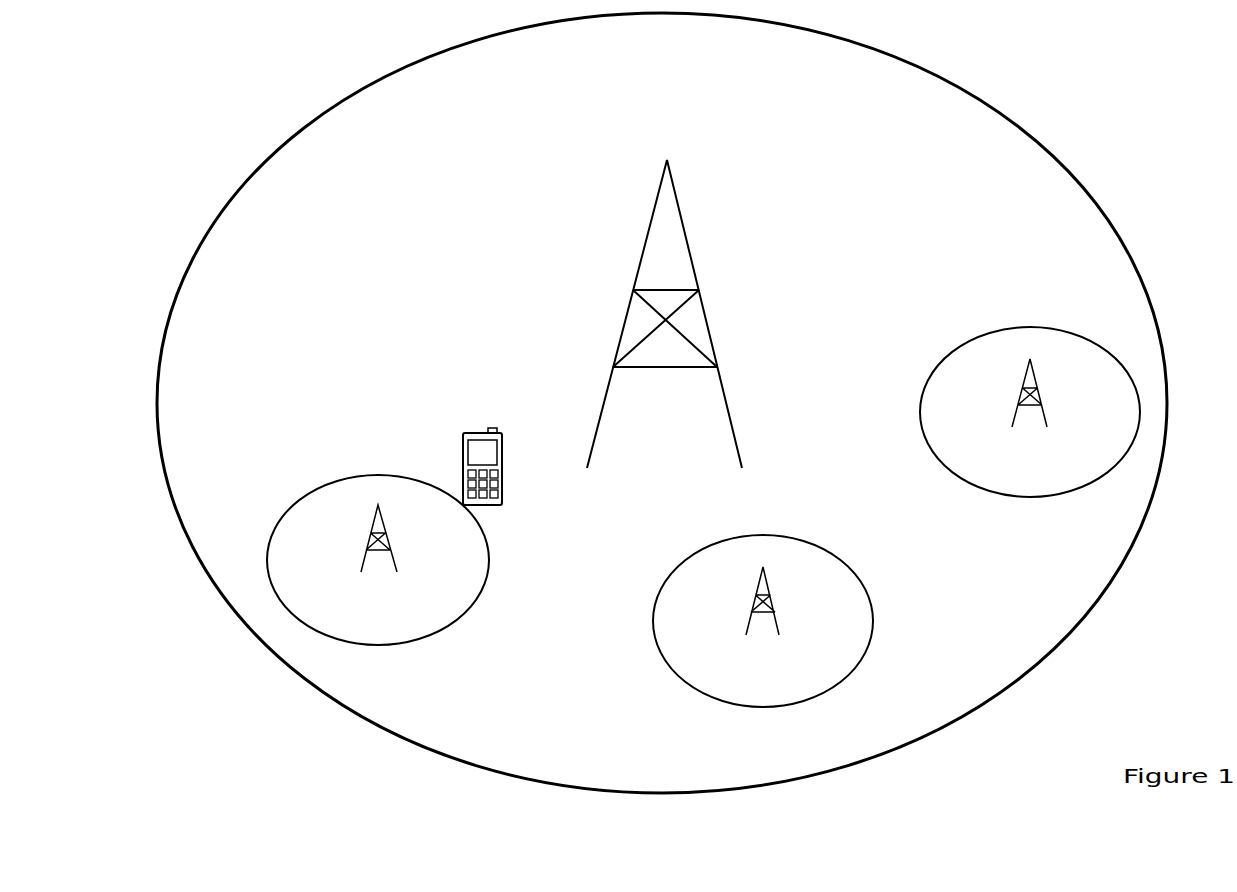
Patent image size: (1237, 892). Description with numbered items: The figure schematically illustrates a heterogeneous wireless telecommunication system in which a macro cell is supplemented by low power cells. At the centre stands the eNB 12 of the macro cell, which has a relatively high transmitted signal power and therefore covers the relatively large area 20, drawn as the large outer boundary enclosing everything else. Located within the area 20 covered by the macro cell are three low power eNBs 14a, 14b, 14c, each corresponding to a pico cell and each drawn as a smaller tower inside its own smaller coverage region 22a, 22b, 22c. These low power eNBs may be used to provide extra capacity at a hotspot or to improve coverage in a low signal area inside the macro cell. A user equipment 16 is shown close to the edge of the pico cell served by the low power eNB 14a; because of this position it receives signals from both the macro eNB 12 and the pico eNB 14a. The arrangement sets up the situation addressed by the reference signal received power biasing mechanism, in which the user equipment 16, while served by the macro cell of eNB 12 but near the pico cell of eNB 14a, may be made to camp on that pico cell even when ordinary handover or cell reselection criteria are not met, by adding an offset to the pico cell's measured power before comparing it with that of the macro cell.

The area covered by macro cell 20 is at (1110, 220).
The eNB of macro cell 12 is at (723, 397).
The user equipment 16 is at (503, 473).
The low power eNB 14a is at (393, 556).
The low power eNB 14b is at (778, 623).
The low power eNB 14c is at (1045, 408).
The pico cell coverage area 22a is at (487, 578).
The pico cell coverage area 22b is at (873, 610).
The pico cell coverage area 22c is at (921, 430).